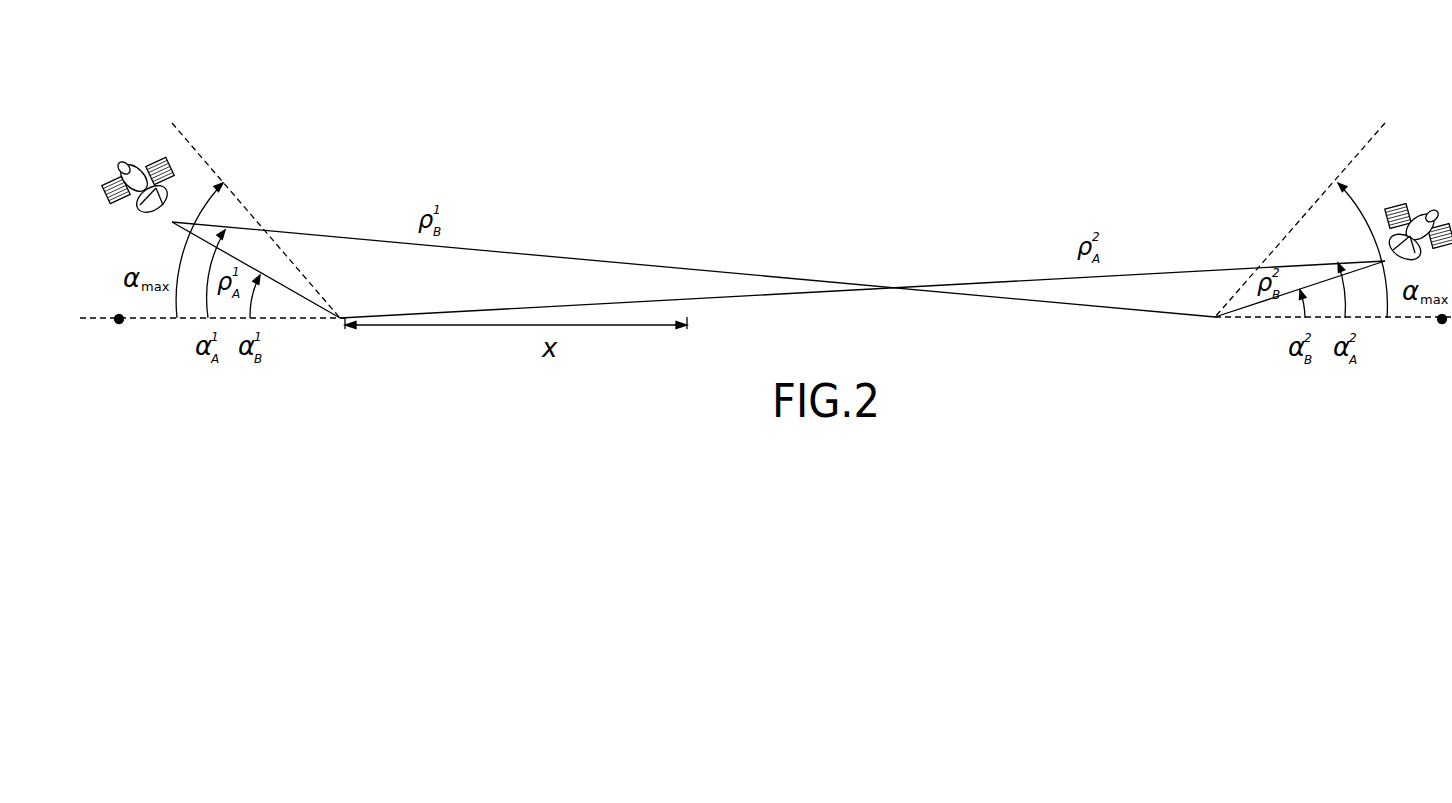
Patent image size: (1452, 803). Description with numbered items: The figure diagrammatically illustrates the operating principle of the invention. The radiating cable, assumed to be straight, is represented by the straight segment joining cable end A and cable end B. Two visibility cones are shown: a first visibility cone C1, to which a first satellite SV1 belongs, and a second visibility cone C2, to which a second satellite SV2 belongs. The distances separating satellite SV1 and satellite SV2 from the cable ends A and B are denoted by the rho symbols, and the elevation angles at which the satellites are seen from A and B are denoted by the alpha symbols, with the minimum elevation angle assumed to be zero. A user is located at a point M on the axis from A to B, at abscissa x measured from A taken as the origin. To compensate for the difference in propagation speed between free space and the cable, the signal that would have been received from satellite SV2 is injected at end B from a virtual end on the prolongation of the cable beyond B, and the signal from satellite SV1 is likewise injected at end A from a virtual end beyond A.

The cable end A is at (230, 321).
The cable end B is at (1320, 339).
The user point M is at (518, 336).
The first visibility cone C1 is at (250, 199).
The second visibility cone C2 is at (1313, 199).
The first satellite SV1 is at (138, 167).
The second satellite SV2 is at (1418, 215).